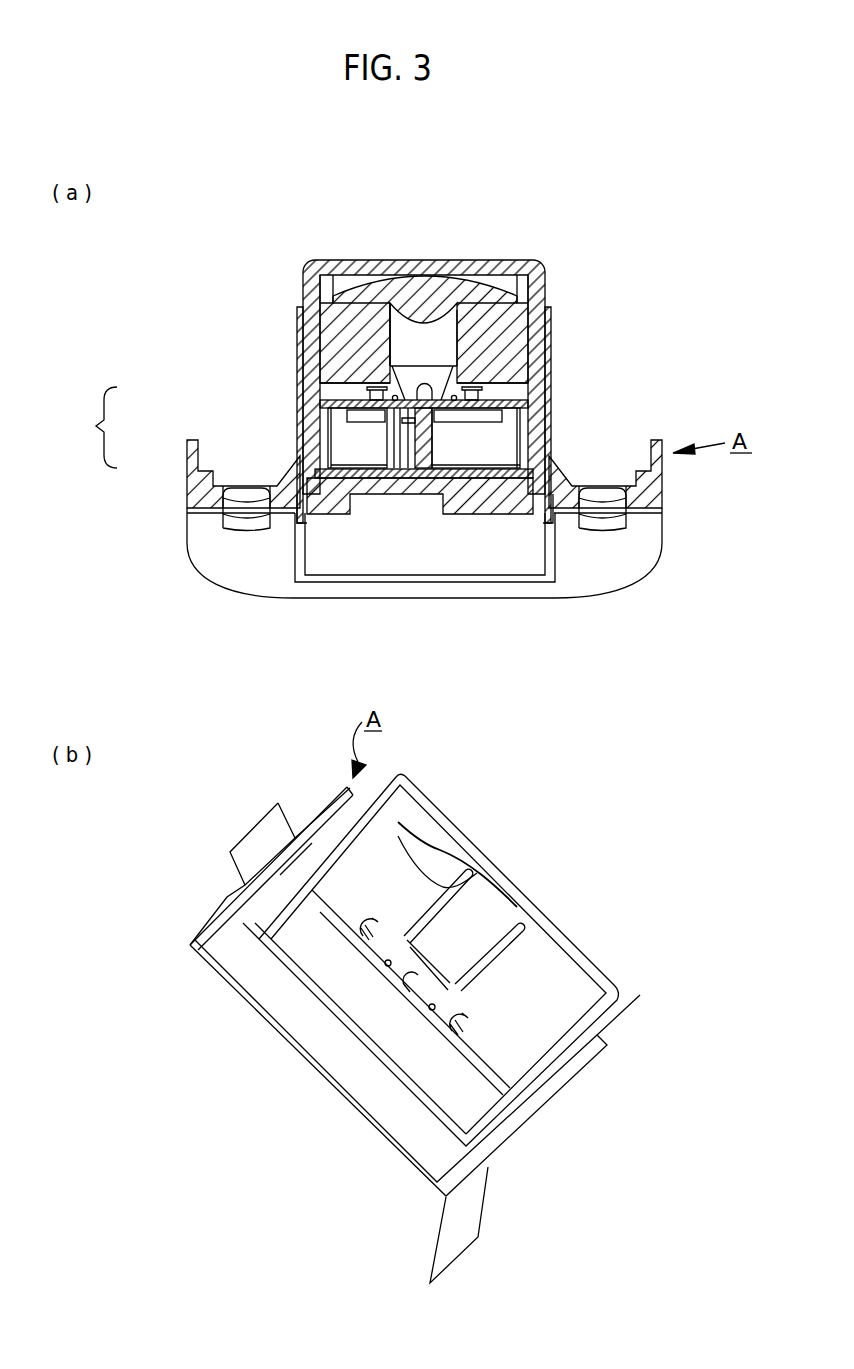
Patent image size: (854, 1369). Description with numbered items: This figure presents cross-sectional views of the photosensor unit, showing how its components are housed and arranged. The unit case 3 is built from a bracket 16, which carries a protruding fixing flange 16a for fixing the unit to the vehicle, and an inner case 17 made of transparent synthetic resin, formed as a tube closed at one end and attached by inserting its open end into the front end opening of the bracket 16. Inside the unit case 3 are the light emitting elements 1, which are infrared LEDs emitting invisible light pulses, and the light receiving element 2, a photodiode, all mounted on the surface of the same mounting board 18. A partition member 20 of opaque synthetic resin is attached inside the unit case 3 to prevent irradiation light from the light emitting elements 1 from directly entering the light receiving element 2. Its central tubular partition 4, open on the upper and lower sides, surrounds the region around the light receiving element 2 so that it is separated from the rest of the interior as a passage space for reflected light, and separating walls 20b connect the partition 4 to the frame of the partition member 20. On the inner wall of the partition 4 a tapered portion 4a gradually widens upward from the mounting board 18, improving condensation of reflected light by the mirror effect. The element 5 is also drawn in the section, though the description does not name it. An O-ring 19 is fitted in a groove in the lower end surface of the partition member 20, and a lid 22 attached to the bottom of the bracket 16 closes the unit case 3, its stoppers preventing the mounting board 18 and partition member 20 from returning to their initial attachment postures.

The light emitting element 1 is at (373, 386).
The light receiving element 2 is at (454, 395).
The unit case 3 is at (96, 427).
The partition 4 is at (497, 960).
The tapered portion 4a is at (403, 382).
The lens 5 is at (450, 278).
The bracket 16 is at (192, 477).
The fixing flange 16a is at (633, 568).
The inner case 17 is at (305, 378).
The mounting board 18 is at (493, 401).
The O-ring 19 is at (450, 412).
The partition member 20 is at (512, 318).
The separating wall 20b is at (510, 322).
The lid 22 is at (328, 505).